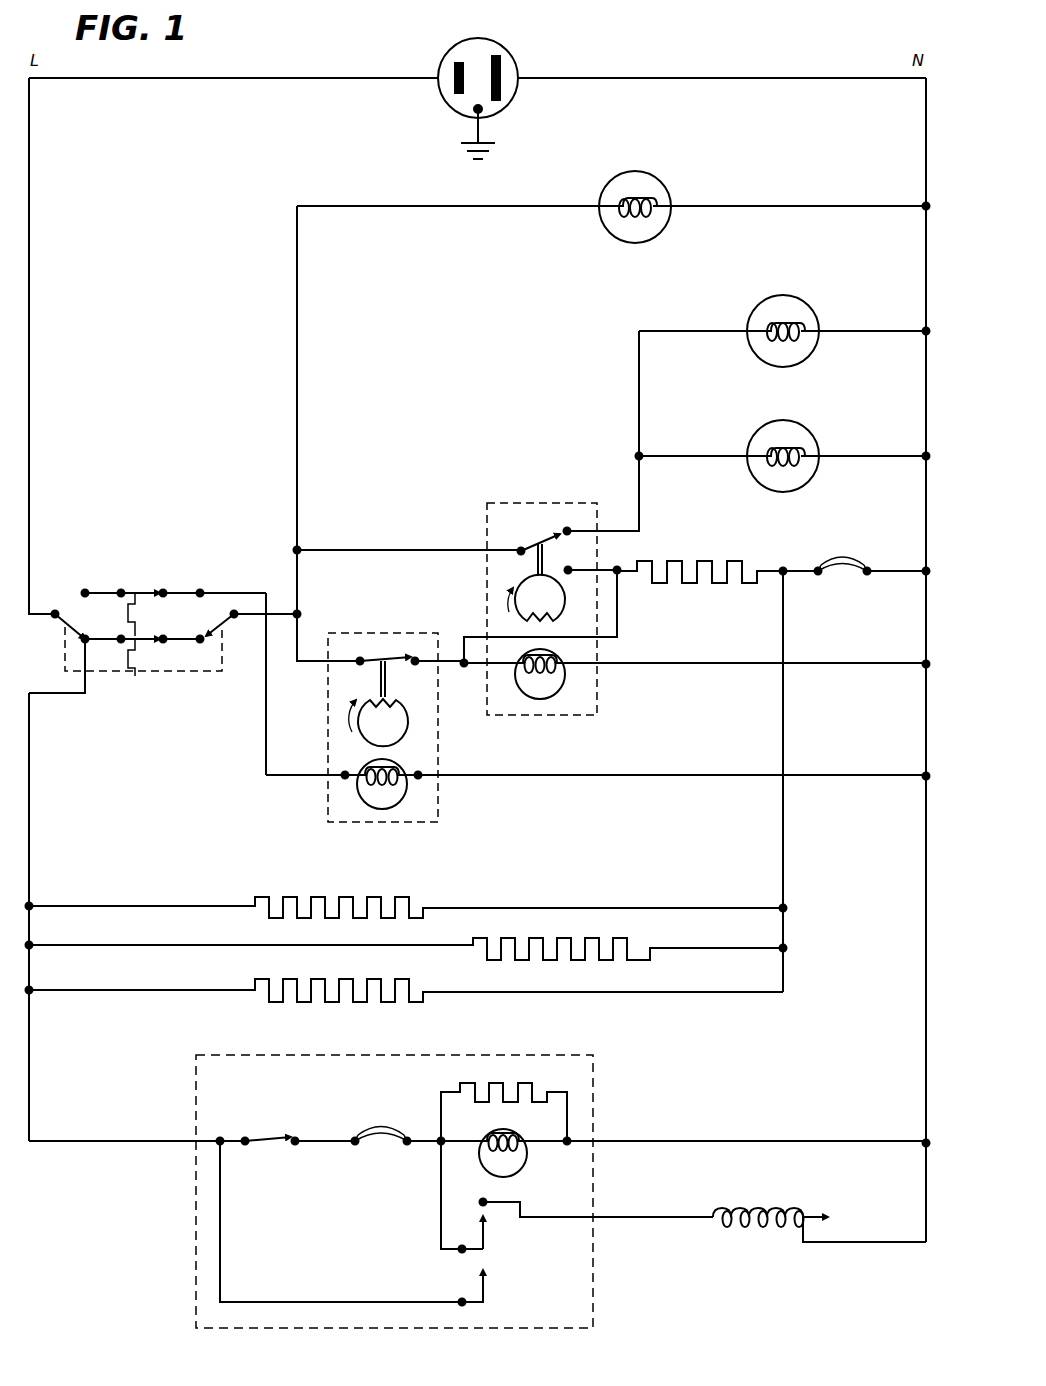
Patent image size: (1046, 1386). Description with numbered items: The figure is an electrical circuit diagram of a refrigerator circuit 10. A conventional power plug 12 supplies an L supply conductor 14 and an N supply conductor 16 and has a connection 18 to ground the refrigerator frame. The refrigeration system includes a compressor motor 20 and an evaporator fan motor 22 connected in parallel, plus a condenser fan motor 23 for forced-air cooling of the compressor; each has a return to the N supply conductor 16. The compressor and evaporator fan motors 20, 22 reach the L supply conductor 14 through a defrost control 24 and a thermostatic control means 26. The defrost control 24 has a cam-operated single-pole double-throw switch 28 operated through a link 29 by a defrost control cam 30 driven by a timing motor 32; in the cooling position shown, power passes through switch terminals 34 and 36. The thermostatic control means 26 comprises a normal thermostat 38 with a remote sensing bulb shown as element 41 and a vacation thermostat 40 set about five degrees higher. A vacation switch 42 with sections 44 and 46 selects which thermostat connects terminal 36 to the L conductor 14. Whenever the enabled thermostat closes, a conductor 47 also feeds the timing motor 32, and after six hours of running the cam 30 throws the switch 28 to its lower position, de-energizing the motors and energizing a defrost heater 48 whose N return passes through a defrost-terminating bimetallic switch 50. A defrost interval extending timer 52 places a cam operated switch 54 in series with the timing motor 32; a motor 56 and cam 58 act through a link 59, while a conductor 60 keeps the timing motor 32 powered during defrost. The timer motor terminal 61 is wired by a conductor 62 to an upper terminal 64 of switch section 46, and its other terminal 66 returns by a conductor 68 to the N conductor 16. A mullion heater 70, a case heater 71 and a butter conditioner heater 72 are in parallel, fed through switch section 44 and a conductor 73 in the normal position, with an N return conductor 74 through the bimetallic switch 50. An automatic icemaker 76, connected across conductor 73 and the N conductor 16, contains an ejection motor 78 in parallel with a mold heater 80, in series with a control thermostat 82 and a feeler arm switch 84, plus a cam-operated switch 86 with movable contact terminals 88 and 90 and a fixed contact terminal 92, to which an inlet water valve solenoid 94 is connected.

The refrigerator circuit 10 is at (135, 1183).
The power plug 12 is at (442, 58).
The L supply conductor 14 is at (29, 172).
The N supply conductor 16 is at (926, 148).
The ground connection 18 is at (478, 135).
The compressor motor 20 is at (748, 319).
The evaporator fan motor 22 is at (748, 444).
The condenser fan motor 23 is at (660, 186).
The defrost control 24 is at (487, 509).
The thermostatic control means 26 is at (158, 582).
The defrost control switch 28 is at (548, 530).
The link 29 is at (535, 558).
The defrost control cam 30 is at (562, 594).
The timing motor 32 is at (540, 700).
The switch terminal 34 is at (575, 529).
The switch terminal 36 is at (520, 549).
The normal thermostat 38 is at (140, 640).
The vacation thermostat 40 is at (136, 594).
The remote temperature-sensing bulb element 41 is at (138, 669).
The vacation switch 42 is at (58, 590).
The switch section 44 is at (54, 642).
The switch section 46 is at (226, 642).
The conductor 47 is at (297, 664).
The defrost heater 48 is at (714, 584).
The defrost-terminating bimetallic switch 50 is at (845, 565).
The defrost interval extending timer 52 is at (332, 633).
The cam operated switch 54 is at (380, 648).
The motor 56 is at (407, 800).
The cam 58 is at (408, 721).
The link 59 is at (392, 666).
The conductor 60 is at (464, 637).
The terminal 61 is at (342, 780).
The conductor 62 is at (266, 731).
The upper terminal 64 is at (205, 593).
The terminal 66 is at (423, 772).
The conductor 68 is at (630, 776).
The mullion heater 70 is at (258, 919).
The case heater 71 is at (258, 1001).
The butter conditioner heater 72 is at (652, 959).
The conductor 73 is at (29, 790).
The N return conductor 74 is at (783, 863).
The automatic icemaker 76 is at (196, 1083).
The ejection motor 78 is at (526, 1166).
The mold heater 80 is at (460, 1083).
The control thermostat 82 is at (375, 1130).
The feeler arm switch 84 is at (258, 1141).
The cam-operated switch 86 is at (466, 1223).
The first movable contact terminal 88 is at (462, 1300).
The second movable contact terminal 90 is at (462, 1248).
The fixed contact terminal 92 is at (481, 1200).
The inlet water valve solenoid 94 is at (728, 1226).